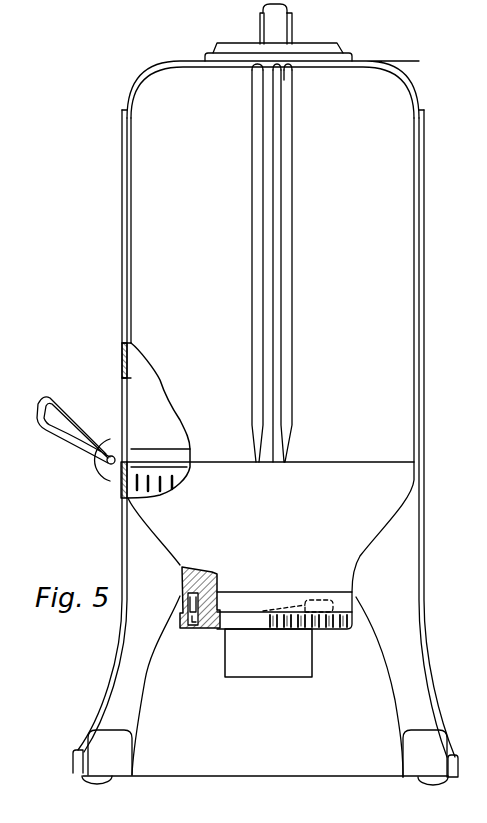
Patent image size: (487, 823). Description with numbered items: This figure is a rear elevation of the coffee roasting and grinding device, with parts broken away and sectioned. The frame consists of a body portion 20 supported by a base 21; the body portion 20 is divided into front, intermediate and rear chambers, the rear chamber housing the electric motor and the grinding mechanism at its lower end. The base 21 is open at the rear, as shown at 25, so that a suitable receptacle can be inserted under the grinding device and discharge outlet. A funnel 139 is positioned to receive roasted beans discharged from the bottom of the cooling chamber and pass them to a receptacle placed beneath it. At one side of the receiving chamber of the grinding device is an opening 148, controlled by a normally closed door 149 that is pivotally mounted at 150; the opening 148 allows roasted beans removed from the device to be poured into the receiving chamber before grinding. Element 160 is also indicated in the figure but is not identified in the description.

The body portion 20 is at (418, 340).
The base 21 is at (415, 740).
The rear opening of base 25 is at (363, 698).
The funnel 139 is at (295, 662).
The opening 148 is at (121, 405).
The door 149 is at (85, 430).
The pivot 150 is at (105, 470).
The cutter 160 is at (303, 610).